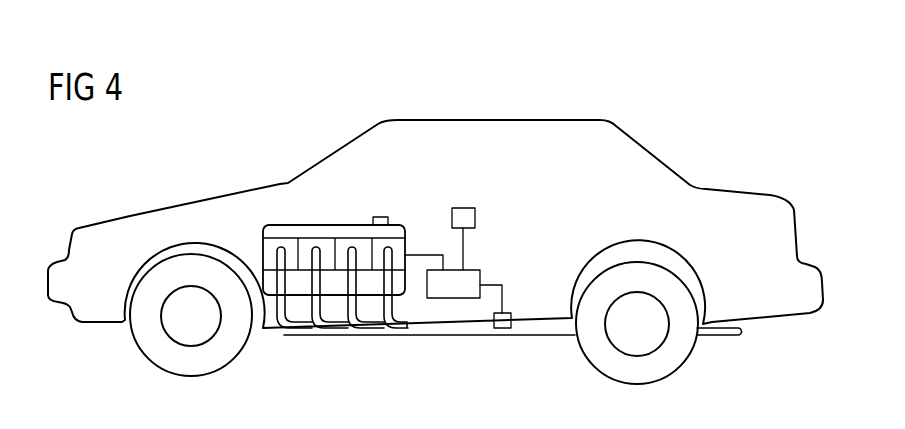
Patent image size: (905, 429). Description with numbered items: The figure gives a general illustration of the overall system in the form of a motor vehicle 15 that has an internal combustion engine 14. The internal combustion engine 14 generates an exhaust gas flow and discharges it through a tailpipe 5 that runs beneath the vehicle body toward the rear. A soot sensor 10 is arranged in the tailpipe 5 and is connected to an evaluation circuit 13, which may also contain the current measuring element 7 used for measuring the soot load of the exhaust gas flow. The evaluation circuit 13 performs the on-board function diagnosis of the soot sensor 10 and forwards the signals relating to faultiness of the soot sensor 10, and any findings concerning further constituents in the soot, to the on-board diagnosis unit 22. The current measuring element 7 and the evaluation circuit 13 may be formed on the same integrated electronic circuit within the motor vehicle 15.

The motor vehicle 15 is at (697, 127).
The internal combustion engine 14 is at (267, 248).
The tailpipe 5 is at (467, 337).
The current measuring element 7 is at (449, 270).
The on-board diagnosis unit 22 is at (467, 208).
The evaluation circuit 13 is at (480, 279).
The soot sensor 10 is at (511, 321).